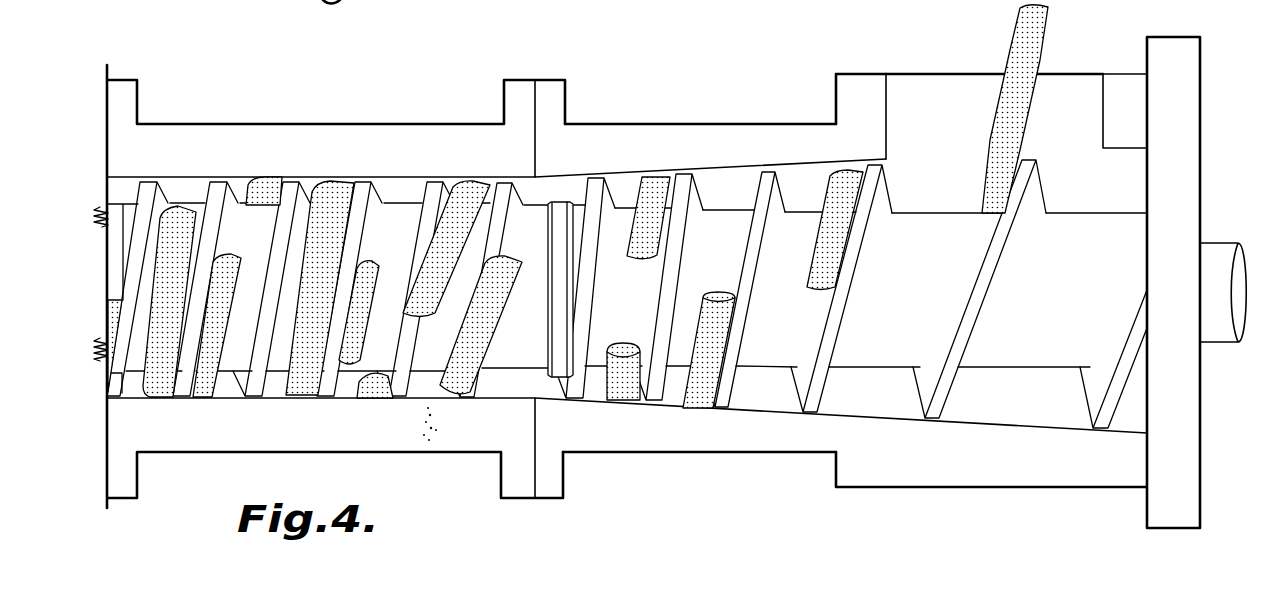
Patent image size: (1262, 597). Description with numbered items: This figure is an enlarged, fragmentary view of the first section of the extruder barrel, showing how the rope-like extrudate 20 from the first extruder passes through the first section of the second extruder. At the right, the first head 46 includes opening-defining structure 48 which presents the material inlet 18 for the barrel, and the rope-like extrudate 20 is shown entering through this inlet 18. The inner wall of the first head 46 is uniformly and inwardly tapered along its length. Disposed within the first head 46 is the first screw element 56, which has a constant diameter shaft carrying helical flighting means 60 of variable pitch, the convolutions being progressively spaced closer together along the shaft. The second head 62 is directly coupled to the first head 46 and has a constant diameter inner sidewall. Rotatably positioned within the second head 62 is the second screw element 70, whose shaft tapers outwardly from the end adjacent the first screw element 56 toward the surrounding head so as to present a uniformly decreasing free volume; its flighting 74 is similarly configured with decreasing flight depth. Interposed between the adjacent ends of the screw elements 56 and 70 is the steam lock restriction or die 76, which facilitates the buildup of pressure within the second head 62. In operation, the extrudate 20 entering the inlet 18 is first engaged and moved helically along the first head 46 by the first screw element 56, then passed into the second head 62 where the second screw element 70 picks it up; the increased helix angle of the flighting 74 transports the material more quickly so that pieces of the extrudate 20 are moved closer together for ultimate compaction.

The material inlet 18 is at (928, 90).
The rope-like extrudate 20 is at (503, 268).
The first head 46 is at (692, 137).
The opening-defining structure 48 is at (860, 87).
The first screw element 56 is at (1003, 374).
The helical flighting means 60 is at (990, 265).
The second head 62 is at (298, 140).
The second screw element 70 is at (217, 386).
The flighting 74 is at (343, 218).
The steam lock restriction or die 76 is at (563, 297).